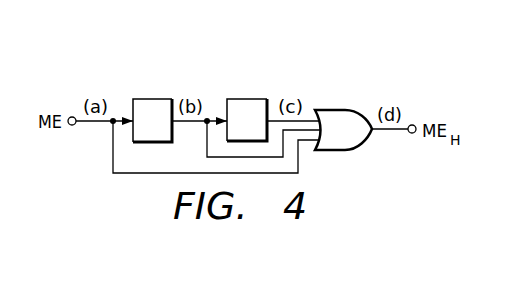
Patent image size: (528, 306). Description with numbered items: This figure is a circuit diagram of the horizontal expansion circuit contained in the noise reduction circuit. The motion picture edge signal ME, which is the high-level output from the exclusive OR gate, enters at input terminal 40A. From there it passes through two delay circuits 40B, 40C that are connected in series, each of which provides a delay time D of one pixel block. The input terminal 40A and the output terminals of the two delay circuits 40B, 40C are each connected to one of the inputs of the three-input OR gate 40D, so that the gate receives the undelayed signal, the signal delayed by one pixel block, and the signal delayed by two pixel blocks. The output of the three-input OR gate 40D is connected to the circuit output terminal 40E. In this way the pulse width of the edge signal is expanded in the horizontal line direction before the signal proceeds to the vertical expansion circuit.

The input terminal 40A is at (70, 125).
The delay circuit 40B is at (152, 99).
The delay circuit 40C is at (248, 99).
The 3-input OR gate 40D is at (342, 109).
The circuit output terminal 40E is at (415, 125).